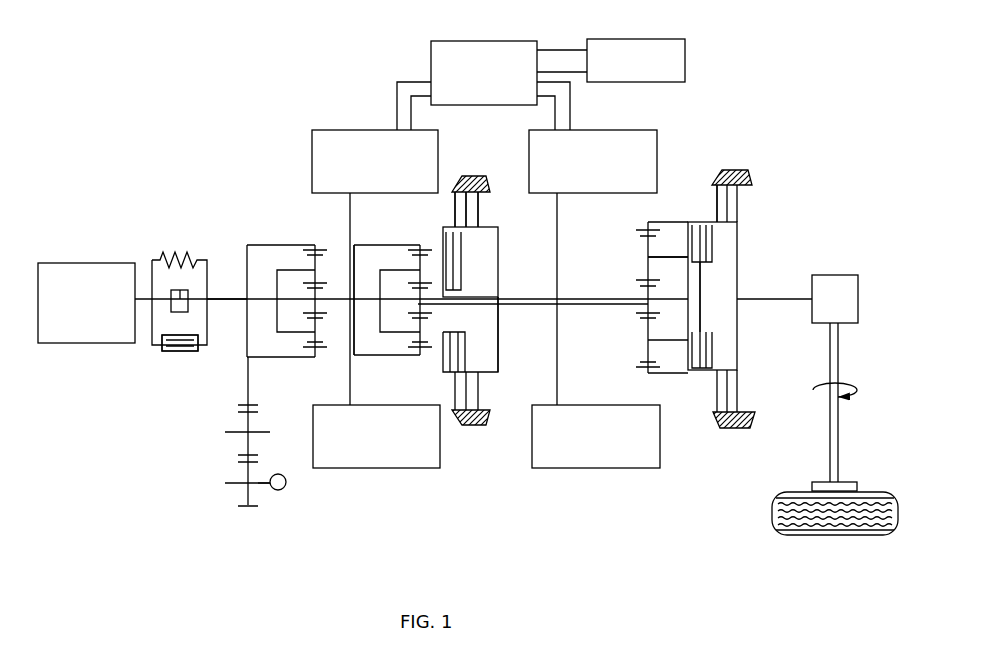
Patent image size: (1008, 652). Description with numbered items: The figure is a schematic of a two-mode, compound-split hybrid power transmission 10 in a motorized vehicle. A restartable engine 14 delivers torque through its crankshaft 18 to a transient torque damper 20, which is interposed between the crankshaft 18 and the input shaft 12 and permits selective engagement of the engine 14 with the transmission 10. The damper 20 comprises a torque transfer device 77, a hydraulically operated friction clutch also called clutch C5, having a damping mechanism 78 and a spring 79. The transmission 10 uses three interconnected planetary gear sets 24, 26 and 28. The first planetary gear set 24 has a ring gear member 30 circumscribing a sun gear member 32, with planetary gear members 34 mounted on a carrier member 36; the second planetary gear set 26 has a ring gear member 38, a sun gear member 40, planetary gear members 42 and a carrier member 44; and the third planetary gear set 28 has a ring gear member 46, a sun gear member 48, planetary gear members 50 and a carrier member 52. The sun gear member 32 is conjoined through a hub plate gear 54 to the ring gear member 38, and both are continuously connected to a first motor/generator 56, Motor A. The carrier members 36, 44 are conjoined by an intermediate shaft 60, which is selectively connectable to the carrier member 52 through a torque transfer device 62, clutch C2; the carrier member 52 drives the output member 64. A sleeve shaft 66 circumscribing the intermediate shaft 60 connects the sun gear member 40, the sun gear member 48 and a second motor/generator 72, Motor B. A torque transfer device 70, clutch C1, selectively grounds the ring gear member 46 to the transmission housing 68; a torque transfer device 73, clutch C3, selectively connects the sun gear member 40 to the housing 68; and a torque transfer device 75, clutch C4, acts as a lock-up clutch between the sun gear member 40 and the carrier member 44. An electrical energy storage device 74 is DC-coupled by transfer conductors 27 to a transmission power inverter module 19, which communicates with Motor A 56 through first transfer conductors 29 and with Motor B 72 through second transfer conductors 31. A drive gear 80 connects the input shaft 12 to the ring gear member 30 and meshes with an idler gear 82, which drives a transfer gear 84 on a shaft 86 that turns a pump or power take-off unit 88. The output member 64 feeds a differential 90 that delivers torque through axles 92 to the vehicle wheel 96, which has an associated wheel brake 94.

The power transmission 10 is at (240, 100).
The input shaft 12 is at (240, 299).
The engine 14 is at (84, 263).
The crankshaft 18 is at (142, 299).
The transmission power inverter module 19 is at (431, 57).
The transient torque damper 20 is at (150, 188).
The first planetary gear set 24 is at (305, 237).
The second planetary gear set 26 is at (410, 237).
The transfer conductors 27 is at (560, 48).
The third planetary gear set 28 is at (640, 225).
The first transfer conductors 29 is at (397, 110).
The ring gear member 30 is at (322, 250).
The second transfer conductors 31 is at (570, 97).
The sun gear member 32 is at (318, 290).
The planetary gear members 34 is at (308, 265).
The carrier member 36 is at (277, 318).
The ring gear member 38 is at (425, 250).
The sun gear member 40 is at (425, 288).
The planetary gear members 42 is at (412, 270).
The carrier member 44 is at (382, 318).
The ring gear member 46 is at (640, 229).
The sun gear member 48 is at (640, 284).
The planetary gear members 50 is at (645, 257).
The carrier member 52 is at (737, 235).
The hub plate gear 54 is at (357, 280).
The first motor/generator 56 is at (312, 148).
The intermediate shaft 60 is at (532, 304).
The torque transfer device 62 is at (705, 268).
The transmission output member 64 is at (790, 299).
The sleeve shaft 66 is at (505, 299).
The transmission housing 68 is at (458, 177).
The torque transfer device 70 is at (708, 198).
The second motor/generator 72 is at (657, 135).
The torque transfer device 73 is at (485, 212).
The electrical energy storage device 74 is at (685, 50).
The torque transfer device 75 is at (480, 263).
The torque transfer device 77 is at (162, 350).
The damping mechanism 78 is at (183, 290).
The spring 79 is at (165, 257).
The drive gear 80 is at (247, 340).
The idler gear 82 is at (245, 420).
The transfer gear 84 is at (245, 490).
The shaft 86 is at (260, 485).
The hydraulic/transmission fluid pump and/or power take-off unit 88 is at (286, 488).
The differential 90 is at (812, 320).
The axles 92 is at (838, 362).
The wheel brake 94 is at (857, 486).
The wheel 96 is at (780, 530).
The clutch C1 is at (742, 203).
The clutch C2 is at (688, 296).
The clutch C3 is at (487, 191).
The clutch C4 is at (470, 326).
The clutch C5 is at (180, 358).